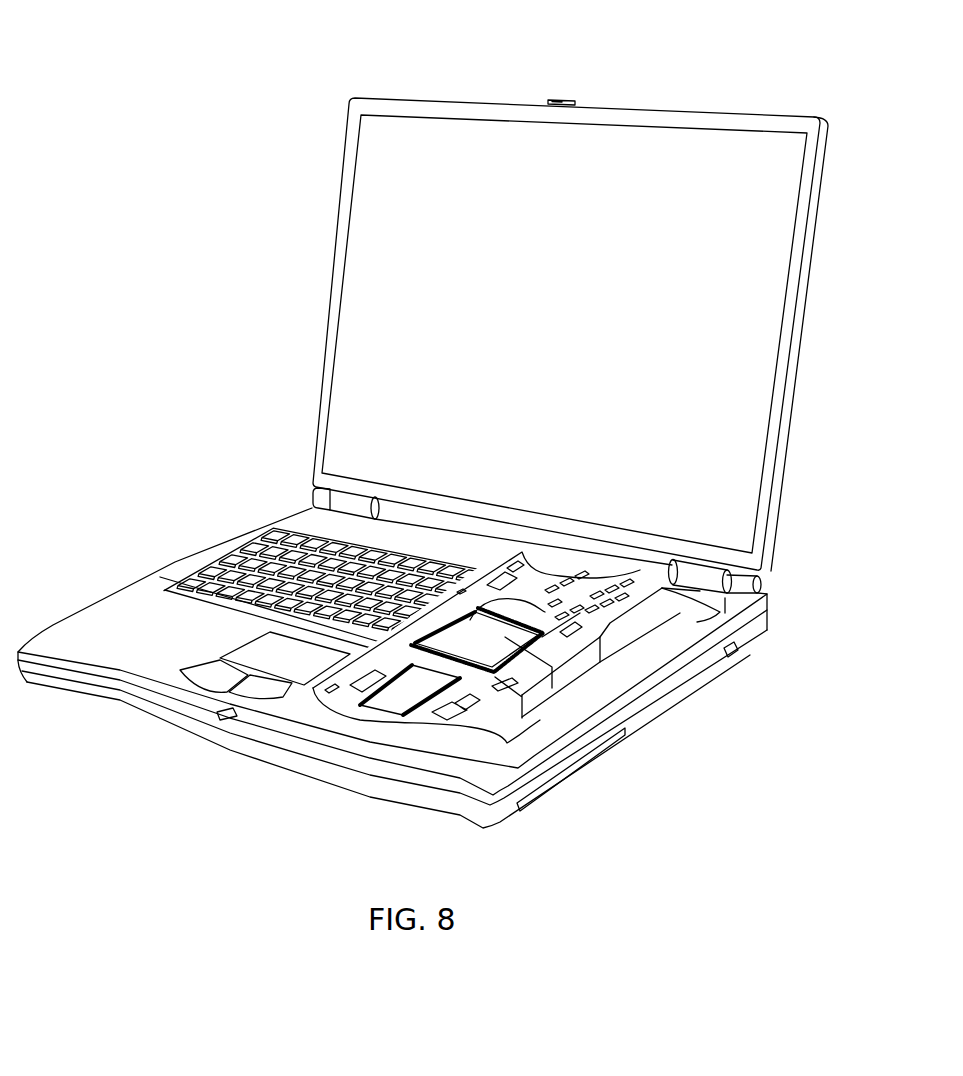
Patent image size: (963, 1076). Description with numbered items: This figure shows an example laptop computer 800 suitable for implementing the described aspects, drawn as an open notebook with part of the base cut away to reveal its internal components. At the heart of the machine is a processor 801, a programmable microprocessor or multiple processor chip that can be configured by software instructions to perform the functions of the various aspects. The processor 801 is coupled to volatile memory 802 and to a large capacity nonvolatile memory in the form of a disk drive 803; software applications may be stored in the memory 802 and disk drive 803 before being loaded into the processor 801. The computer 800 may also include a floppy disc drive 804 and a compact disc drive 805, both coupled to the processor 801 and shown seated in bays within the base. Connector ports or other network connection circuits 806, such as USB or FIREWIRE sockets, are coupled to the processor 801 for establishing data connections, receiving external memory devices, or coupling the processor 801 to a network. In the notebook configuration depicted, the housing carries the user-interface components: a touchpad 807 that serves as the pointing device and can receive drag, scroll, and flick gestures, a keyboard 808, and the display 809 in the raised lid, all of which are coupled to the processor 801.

The laptop computer 800 is at (727, 90).
The processor 801 is at (496, 650).
The volatile memory 802 is at (408, 693).
The disk drive 803 is at (527, 732).
The floppy disc drive 804 is at (600, 682).
The compact disc (CD) drive 805 is at (665, 625).
The network connection circuits 806 is at (788, 445).
The touchpad 807 is at (247, 657).
The keyboard 808 is at (202, 573).
The display 809 is at (758, 508).